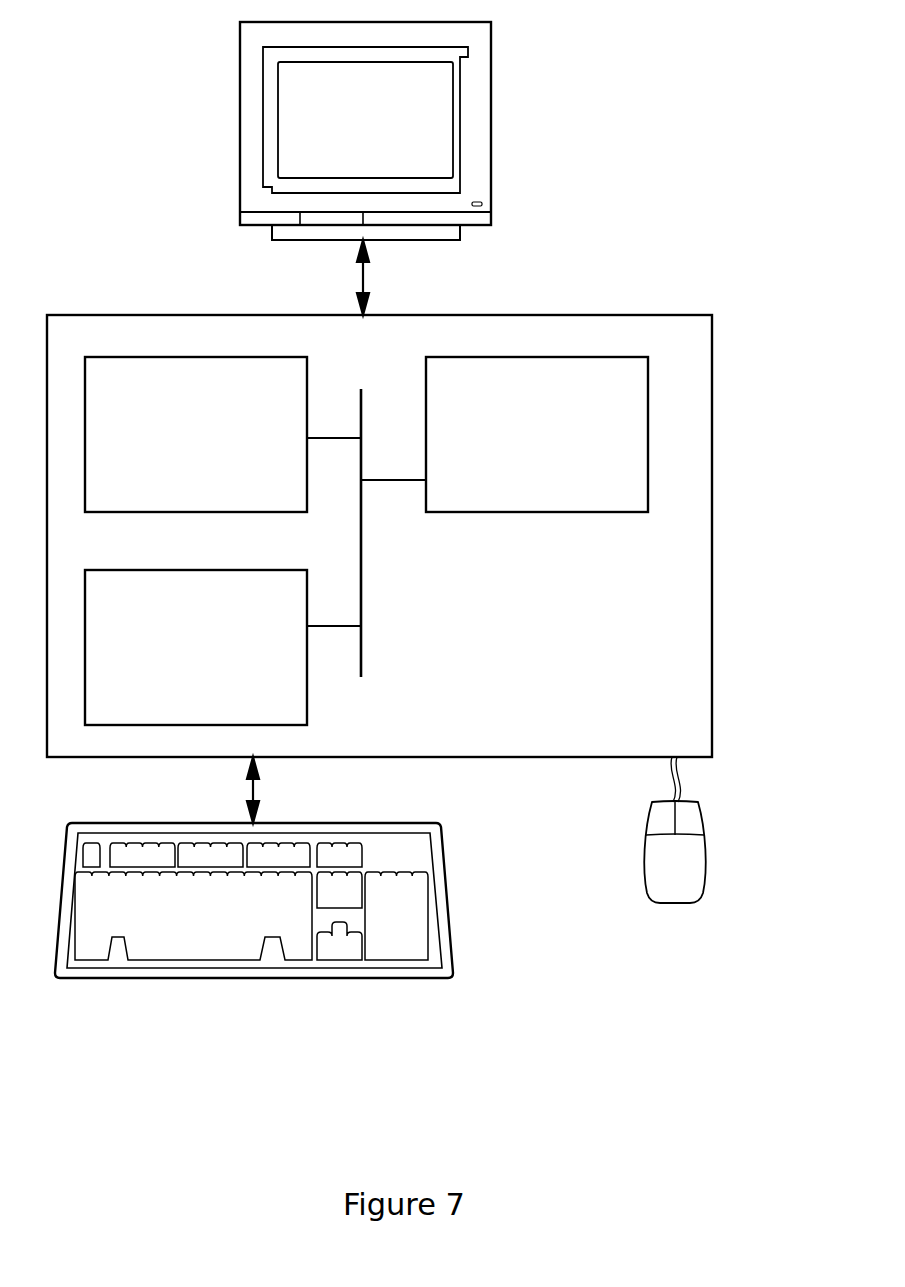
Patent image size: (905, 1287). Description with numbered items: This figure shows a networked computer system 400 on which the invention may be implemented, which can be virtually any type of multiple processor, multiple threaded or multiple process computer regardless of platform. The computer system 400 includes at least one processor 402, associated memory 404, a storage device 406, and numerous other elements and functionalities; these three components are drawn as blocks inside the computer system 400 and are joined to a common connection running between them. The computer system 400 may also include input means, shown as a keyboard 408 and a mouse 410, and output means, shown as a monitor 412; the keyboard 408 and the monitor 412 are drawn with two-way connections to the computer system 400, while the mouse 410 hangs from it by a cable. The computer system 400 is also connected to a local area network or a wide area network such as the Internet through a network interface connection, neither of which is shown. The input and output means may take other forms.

The computer system 400 is at (725, 178).
The processor 402 is at (533, 446).
The memory 404 is at (175, 445).
The storage device 406 is at (213, 659).
The keyboard 408 is at (167, 937).
The mouse 410 is at (655, 874).
The monitor 412 is at (340, 143).